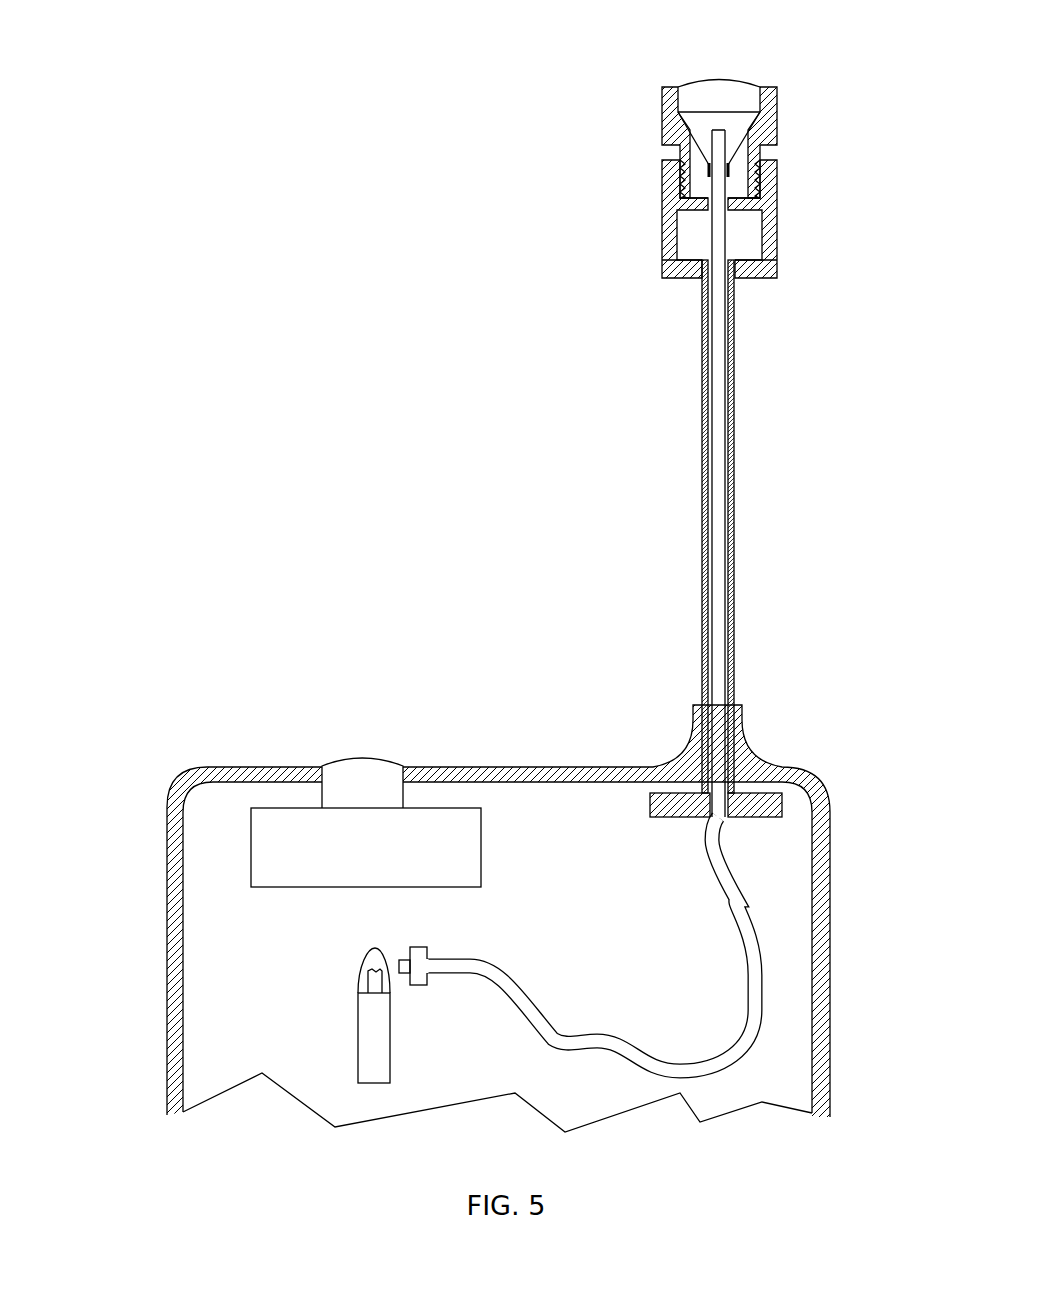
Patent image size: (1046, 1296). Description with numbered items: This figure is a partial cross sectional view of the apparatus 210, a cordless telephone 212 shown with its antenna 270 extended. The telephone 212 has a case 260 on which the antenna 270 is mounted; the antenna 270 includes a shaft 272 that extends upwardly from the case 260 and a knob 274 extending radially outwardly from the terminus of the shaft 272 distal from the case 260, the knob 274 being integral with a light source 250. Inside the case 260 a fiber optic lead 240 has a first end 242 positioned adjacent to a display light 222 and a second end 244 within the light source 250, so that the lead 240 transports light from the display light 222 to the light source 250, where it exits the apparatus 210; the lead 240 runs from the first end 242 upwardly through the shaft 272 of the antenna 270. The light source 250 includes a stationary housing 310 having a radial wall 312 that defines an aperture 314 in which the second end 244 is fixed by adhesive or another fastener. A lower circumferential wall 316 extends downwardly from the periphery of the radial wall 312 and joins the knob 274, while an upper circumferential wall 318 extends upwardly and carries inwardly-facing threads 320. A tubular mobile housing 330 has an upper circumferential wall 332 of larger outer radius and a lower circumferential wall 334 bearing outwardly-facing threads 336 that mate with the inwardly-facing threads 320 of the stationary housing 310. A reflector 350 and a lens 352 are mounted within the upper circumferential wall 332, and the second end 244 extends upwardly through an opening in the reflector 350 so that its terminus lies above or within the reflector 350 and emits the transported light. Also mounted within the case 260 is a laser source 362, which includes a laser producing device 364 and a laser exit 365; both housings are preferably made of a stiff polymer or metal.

The apparatus 210 is at (271, 457).
The telephone 212 is at (166, 835).
The display light 222 is at (358, 1020).
The fiber optic lead 240 is at (577, 1035).
The first end 242 is at (450, 968).
The second end 244 is at (722, 148).
The light source 250 is at (663, 424).
The case 260 is at (166, 933).
The antenna 270 is at (717, 526).
The shaft 272 is at (735, 528).
The knob 274 is at (770, 278).
The stationary housing 310 is at (662, 228).
The radial wall 312 is at (666, 203).
The aperture 314 is at (715, 215).
The lower circumferential wall 316 is at (668, 270).
The upper circumferential wall 318 is at (660, 163).
The inwardly-facing threads 320 is at (757, 152).
The mobile housing 330 is at (662, 97).
The upper circumferential wall 332 is at (777, 95).
The lower circumferential wall 334 is at (680, 150).
The outwardly-facing threads 336 is at (763, 185).
The reflector 350 is at (745, 138).
The lens 352 is at (740, 80).
The laser source 362 is at (277, 887).
The laser producing device 364 is at (462, 848).
The laser exit 365 is at (362, 757).